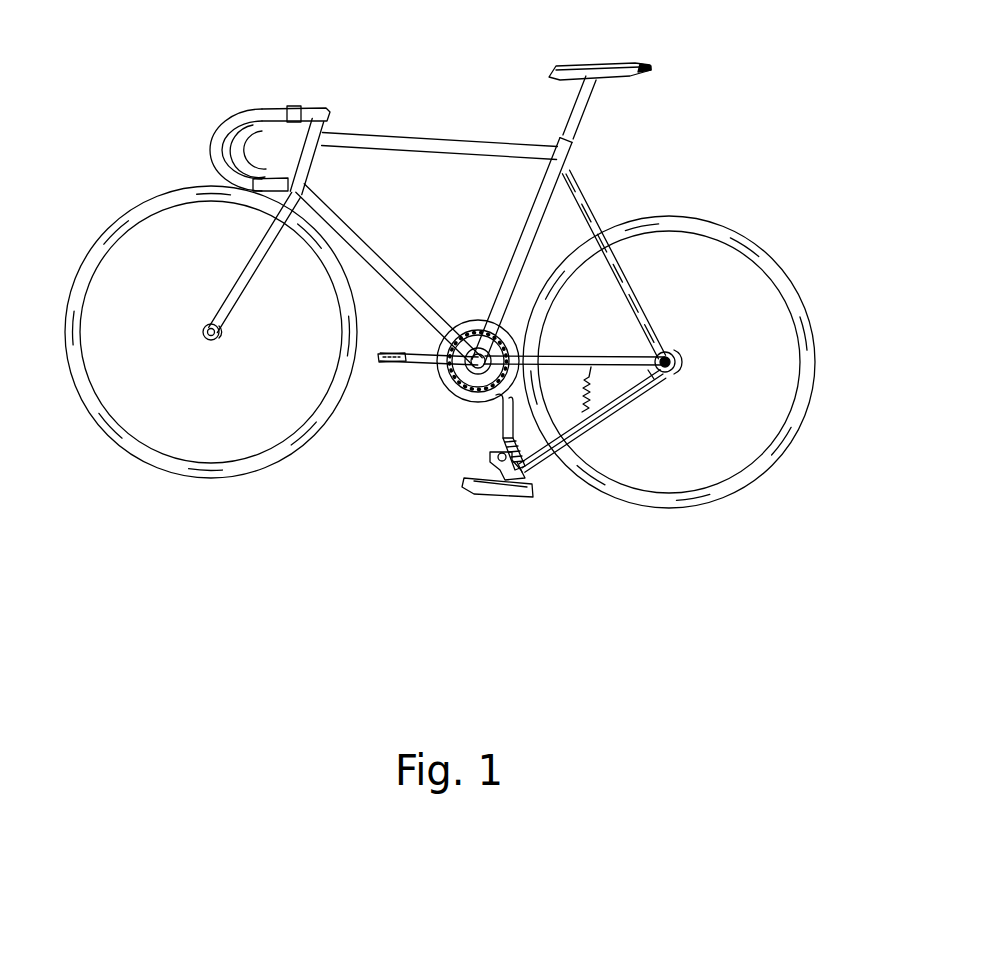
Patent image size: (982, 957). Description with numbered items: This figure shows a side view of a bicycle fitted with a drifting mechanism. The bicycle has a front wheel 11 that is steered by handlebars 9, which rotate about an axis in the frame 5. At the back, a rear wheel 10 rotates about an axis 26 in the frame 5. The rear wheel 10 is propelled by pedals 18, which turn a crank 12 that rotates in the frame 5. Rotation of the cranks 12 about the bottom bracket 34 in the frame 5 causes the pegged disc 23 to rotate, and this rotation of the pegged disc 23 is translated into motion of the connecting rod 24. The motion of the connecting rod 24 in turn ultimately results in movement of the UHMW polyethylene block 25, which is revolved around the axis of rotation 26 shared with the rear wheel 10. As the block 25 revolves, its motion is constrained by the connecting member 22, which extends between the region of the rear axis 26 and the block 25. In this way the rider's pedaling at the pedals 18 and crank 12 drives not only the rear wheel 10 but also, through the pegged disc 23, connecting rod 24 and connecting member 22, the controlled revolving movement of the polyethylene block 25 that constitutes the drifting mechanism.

The frame 5 is at (438, 147).
The handlebars 9 is at (232, 130).
The rear wheel 10 is at (678, 227).
The front wheel 11 is at (150, 212).
The crank 12 is at (442, 363).
The pedals 18 is at (387, 360).
The connecting member 22 is at (577, 432).
The pegged disc 23 is at (478, 378).
The connecting rod 24 is at (505, 412).
The UHMW Polyethylene block 25 is at (498, 490).
The axis 26 is at (667, 375).
The bottom bracket 34 is at (467, 330).